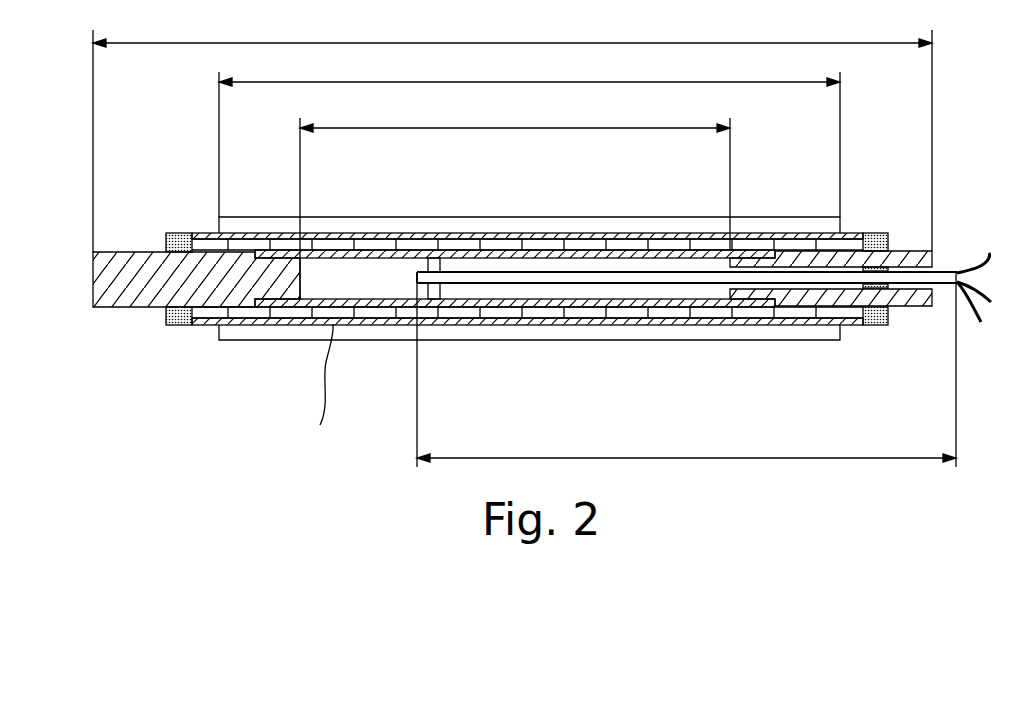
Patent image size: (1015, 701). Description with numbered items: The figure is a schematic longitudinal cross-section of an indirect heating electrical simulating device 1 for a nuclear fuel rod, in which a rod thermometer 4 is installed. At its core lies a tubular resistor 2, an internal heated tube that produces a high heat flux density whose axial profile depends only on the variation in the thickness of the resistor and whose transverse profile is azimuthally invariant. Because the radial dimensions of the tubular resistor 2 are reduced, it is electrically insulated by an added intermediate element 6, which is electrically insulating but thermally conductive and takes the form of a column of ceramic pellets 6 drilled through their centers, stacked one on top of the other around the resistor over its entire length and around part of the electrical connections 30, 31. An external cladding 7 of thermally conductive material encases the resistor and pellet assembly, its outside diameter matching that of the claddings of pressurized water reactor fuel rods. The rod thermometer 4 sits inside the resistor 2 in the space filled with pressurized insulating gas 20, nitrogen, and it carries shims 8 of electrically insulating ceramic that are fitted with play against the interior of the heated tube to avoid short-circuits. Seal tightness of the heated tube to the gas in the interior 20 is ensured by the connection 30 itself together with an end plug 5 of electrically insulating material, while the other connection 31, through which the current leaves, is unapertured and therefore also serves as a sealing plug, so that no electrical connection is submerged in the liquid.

The indirect heating electrical simulating device 1 is at (512, 241).
The tubular resistor 2 is at (628, 308).
The rod thermometer 4 is at (556, 305).
The end plug 5 is at (180, 232).
The intermediate element 6 is at (274, 312).
The external cladding 7 is at (206, 326).
The shims 8 is at (430, 256).
The pressurized insulating gas 20 is at (352, 288).
The connection 30 is at (905, 307).
The connection 31 is at (138, 283).